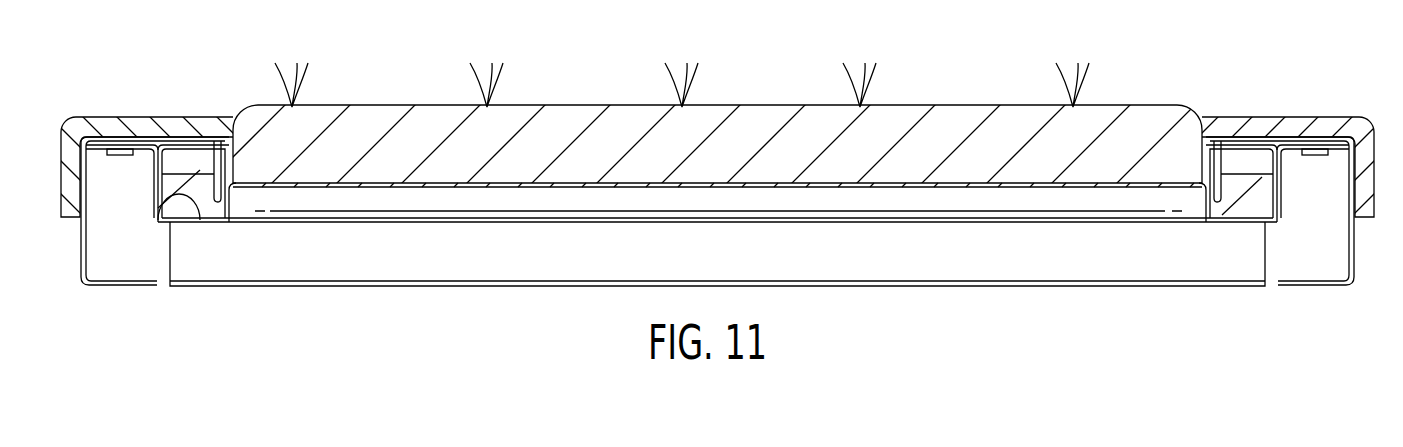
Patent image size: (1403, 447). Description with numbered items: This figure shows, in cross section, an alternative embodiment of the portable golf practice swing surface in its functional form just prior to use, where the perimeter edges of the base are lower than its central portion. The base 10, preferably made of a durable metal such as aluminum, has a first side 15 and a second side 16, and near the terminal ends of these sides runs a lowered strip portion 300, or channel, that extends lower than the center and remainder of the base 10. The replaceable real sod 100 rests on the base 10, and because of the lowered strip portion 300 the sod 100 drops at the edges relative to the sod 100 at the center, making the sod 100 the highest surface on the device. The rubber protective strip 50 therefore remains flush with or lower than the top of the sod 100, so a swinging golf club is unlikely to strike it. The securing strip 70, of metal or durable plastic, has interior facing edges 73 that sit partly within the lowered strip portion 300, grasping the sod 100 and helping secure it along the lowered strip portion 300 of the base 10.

The base 10 is at (417, 263).
The first side 15 is at (81, 258).
The second side 16 is at (1354, 259).
The protective strip 50 is at (102, 122).
The securing strip 70 is at (174, 139).
The interior facing edges 73 is at (213, 200).
The replaceable real sod 100 is at (628, 117).
The lowered strip portion 300 is at (158, 208).